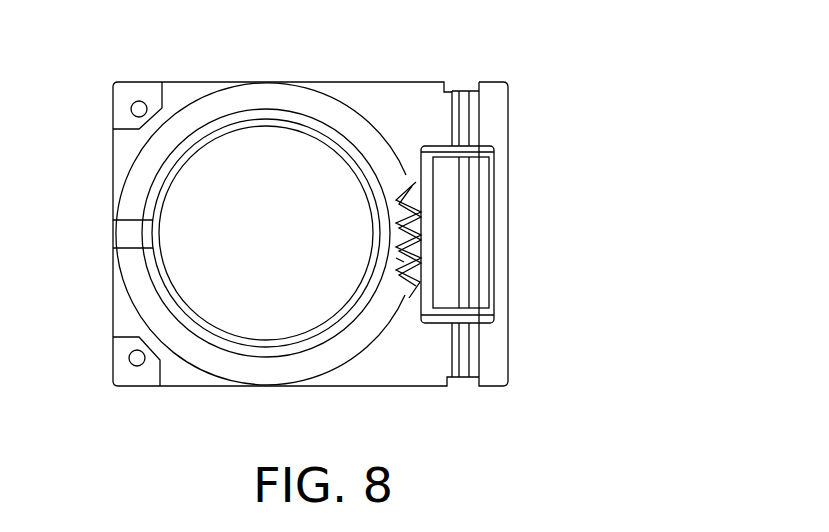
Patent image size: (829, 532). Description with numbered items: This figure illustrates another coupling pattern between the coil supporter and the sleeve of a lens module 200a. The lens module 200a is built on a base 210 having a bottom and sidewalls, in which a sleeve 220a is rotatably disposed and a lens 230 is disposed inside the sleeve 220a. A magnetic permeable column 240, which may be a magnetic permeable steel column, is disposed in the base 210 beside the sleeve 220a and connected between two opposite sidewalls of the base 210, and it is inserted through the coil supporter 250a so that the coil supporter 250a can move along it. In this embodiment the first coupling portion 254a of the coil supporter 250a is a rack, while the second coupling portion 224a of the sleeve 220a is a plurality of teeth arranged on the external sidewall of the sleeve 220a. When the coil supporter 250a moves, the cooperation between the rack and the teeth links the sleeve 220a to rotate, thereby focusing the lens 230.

The lens module 200a is at (580, 492).
The base 210 is at (418, 98).
The sleeve 220a is at (368, 335).
The second coupling portion 224a is at (403, 258).
The lens 230 is at (195, 235).
The magnetic permeable column 240 is at (477, 118).
The coil supporter 250a is at (480, 155).
The first coupling portion 254a is at (415, 223).